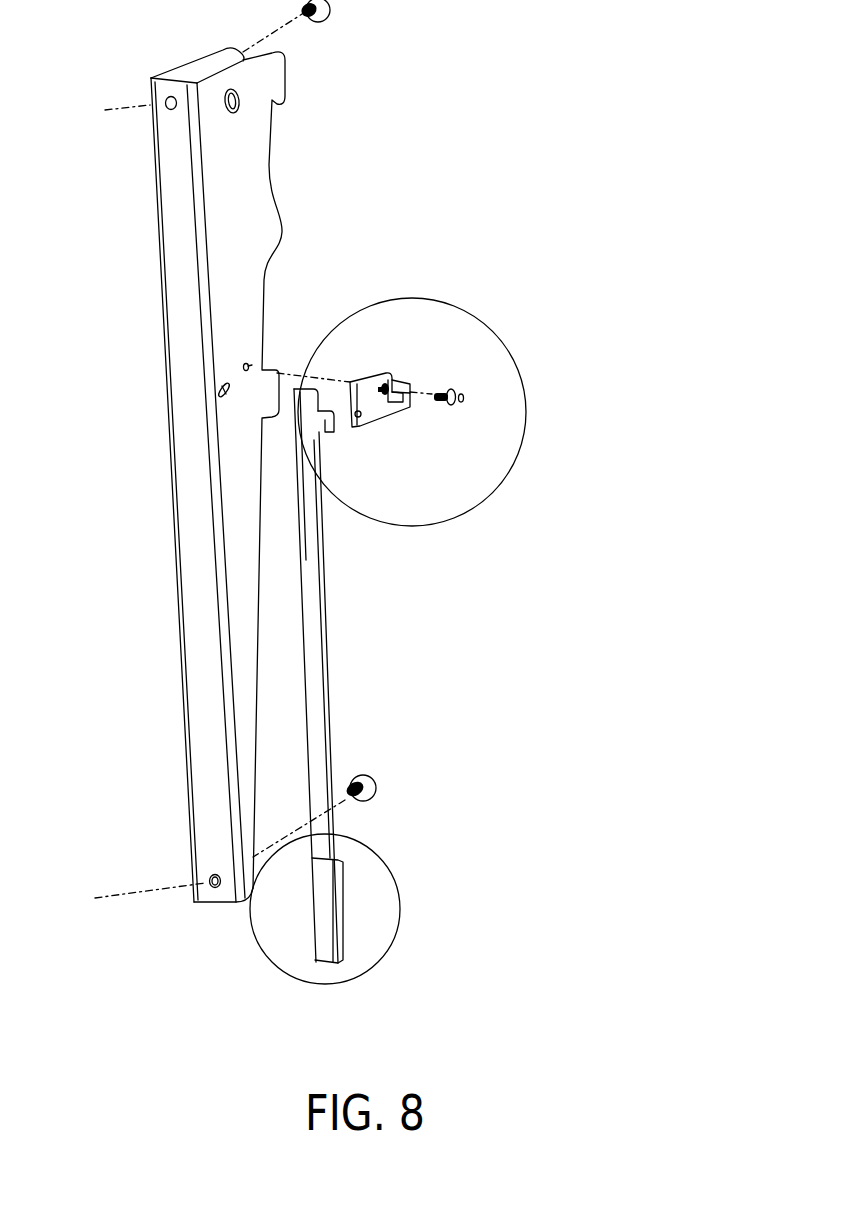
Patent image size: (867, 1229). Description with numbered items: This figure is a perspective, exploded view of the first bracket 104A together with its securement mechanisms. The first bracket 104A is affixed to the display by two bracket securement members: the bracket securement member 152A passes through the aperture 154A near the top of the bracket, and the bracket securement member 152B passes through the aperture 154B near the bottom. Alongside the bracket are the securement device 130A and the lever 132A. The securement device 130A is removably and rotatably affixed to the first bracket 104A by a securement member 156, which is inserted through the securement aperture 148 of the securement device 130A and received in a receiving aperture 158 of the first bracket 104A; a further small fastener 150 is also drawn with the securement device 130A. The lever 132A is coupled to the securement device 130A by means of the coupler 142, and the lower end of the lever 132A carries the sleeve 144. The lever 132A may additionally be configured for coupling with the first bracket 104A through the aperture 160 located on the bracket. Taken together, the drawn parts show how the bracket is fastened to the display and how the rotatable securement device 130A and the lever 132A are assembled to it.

The first bracket 104A is at (240, 233).
The aperture 154A is at (164, 110).
The aperture 154B is at (201, 892).
The bracket securement member 152A is at (343, 24).
The bracket securement member 152B is at (396, 757).
The receiving aperture 158 is at (255, 352).
The aperture 160 is at (199, 379).
The securement device 130A is at (397, 358).
The securement aperture 148 is at (400, 376).
The clip screw 150 is at (374, 420).
The securement member 156 is at (466, 378).
The lever 132A is at (322, 632).
The coupler 142 is at (334, 433).
The sleeve 144 is at (325, 912).